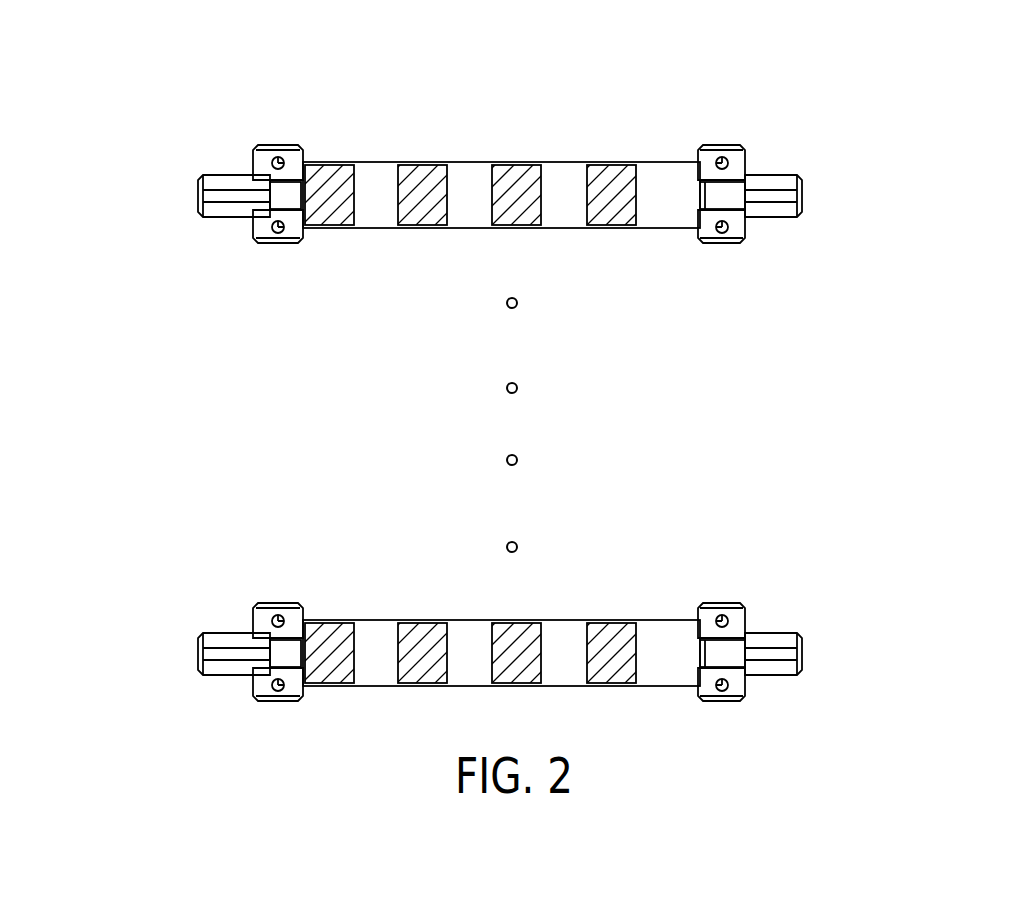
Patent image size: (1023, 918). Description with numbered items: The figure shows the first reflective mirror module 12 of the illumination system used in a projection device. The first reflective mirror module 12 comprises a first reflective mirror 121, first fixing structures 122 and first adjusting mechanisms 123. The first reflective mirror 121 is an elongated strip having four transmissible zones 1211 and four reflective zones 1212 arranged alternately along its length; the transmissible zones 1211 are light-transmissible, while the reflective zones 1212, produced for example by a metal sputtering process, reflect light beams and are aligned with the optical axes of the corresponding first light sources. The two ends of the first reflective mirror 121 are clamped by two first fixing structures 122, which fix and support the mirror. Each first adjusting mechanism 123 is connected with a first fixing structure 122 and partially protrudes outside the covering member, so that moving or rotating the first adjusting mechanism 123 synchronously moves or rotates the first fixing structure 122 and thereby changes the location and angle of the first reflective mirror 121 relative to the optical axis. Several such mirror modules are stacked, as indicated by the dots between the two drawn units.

The first reflective mirror module 12 is at (980, 63).
The first reflective mirror 121 is at (472, 260).
The transmissible zone 1211 is at (372, 200).
The reflective zone 1212 is at (390, 298).
The first fixing structure 122 is at (290, 158).
The first adjusting mechanism 123 is at (230, 180).